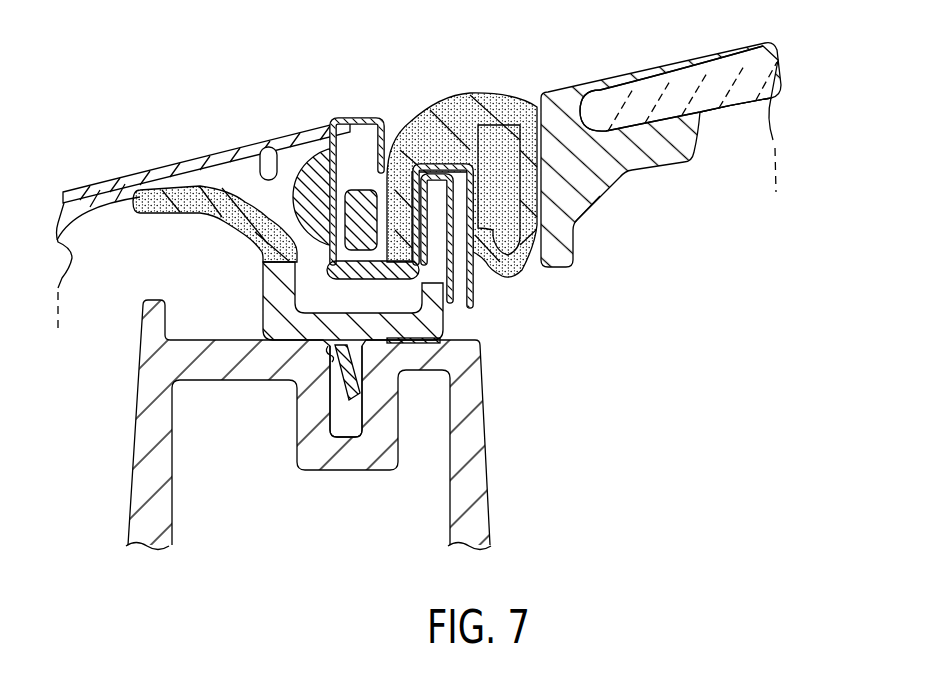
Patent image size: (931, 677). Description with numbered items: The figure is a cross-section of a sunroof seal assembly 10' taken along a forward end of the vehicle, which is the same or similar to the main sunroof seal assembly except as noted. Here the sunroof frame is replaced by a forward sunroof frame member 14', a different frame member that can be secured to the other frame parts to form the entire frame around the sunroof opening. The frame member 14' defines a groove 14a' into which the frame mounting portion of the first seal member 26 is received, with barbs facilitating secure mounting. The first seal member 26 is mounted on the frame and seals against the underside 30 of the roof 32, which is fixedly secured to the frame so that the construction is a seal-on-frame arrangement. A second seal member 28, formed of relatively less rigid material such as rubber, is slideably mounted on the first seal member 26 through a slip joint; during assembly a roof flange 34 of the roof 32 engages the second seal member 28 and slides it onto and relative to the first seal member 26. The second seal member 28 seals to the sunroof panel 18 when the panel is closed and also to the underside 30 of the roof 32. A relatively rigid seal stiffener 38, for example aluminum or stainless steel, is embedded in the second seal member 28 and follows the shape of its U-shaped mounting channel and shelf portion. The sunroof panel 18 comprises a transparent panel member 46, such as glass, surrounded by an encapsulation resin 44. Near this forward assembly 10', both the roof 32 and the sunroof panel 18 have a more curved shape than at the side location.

The sunroof seal assembly 10' is at (466, 46).
The forward sunroof frame member 14' is at (308, 425).
The groove 14a' is at (370, 427).
The sunroof panel 18 is at (626, 188).
The first seal member 26 is at (229, 248).
The second seal member 28 is at (526, 84).
The underside of roof 30 is at (267, 177).
The roof 32 is at (209, 146).
The roof flange 34 is at (260, 247).
The seal stiffener 38 is at (418, 124).
The encapsulation resin 44 is at (585, 187).
The sunroof transparent panel member 46 is at (706, 76).